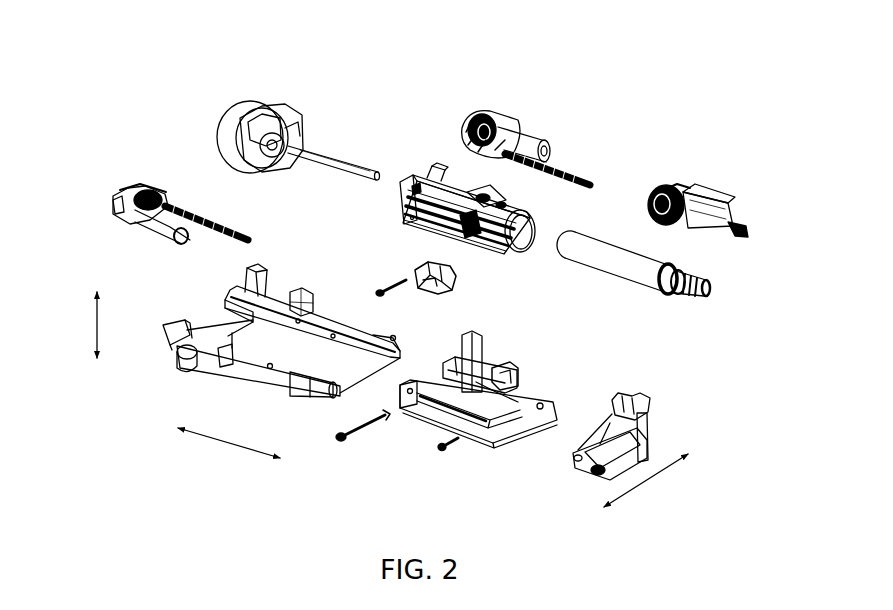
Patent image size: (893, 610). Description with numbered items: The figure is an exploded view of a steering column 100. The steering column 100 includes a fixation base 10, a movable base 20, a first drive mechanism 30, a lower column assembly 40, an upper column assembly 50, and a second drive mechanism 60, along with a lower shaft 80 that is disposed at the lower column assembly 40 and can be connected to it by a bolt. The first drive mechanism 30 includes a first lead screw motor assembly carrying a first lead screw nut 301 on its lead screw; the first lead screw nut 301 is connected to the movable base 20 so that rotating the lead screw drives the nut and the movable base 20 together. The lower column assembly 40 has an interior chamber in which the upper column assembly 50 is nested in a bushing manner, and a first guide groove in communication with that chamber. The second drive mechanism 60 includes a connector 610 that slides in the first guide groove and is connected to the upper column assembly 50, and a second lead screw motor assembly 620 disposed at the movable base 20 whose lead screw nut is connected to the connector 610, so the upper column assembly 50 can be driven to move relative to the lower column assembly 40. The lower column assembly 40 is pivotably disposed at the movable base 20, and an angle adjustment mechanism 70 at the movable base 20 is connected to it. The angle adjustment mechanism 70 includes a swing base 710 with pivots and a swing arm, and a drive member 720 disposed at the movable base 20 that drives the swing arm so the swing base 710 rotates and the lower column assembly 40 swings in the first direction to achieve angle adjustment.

The steering column 100 is at (68, 57).
The fixation base 10 is at (250, 365).
The movable base 20 is at (440, 427).
The first lead screw nut 301 is at (505, 372).
The first drive mechanism 30 is at (528, 127).
The lower column assembly 40 is at (513, 250).
The upper column assembly 50 is at (587, 237).
The second drive mechanism 60 is at (57, 143).
The connector 610 is at (413, 273).
The second lead screw motor assembly 620 is at (127, 187).
The angle adjustment mechanism 70 is at (791, 278).
The swing base 710 is at (650, 417).
The drive member 720 is at (712, 232).
The lower shaft 80 is at (230, 124).